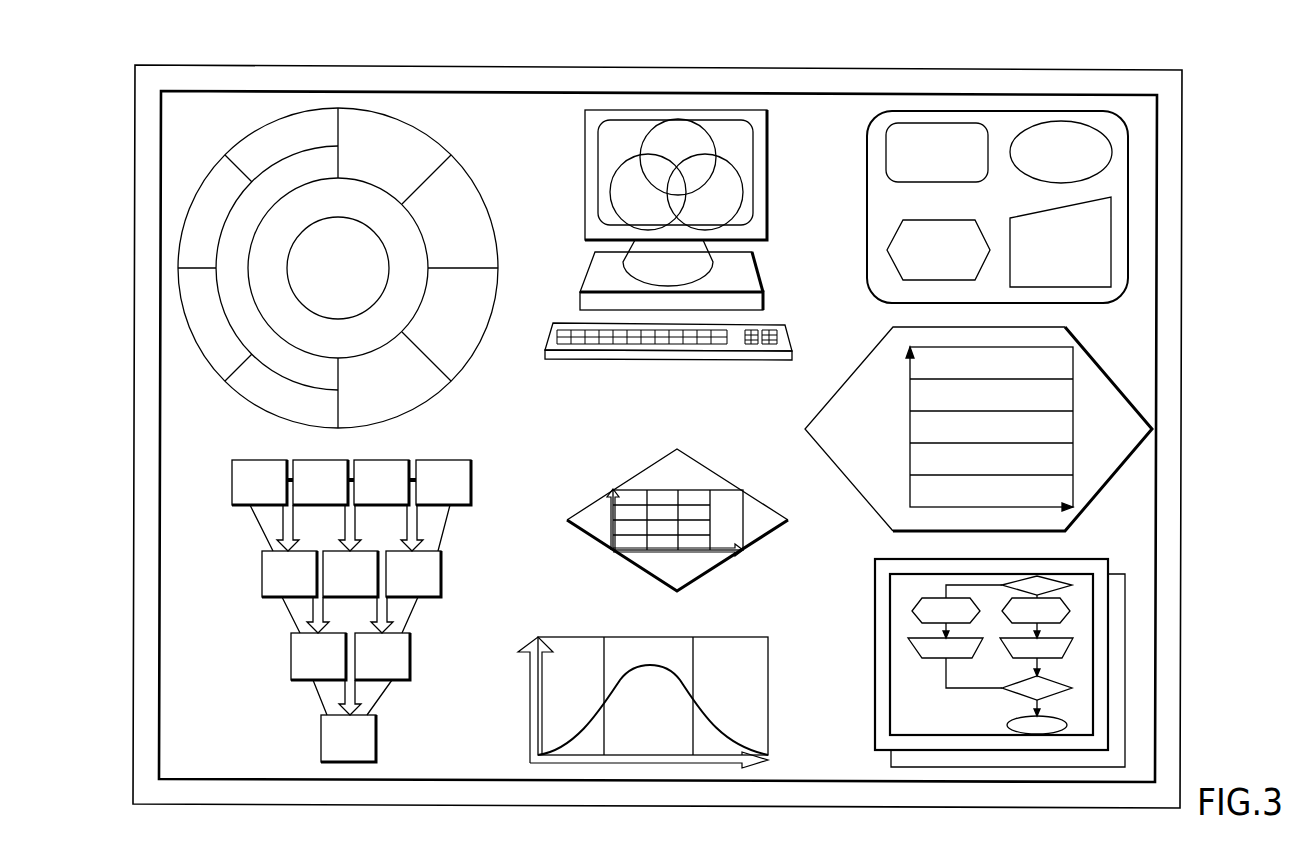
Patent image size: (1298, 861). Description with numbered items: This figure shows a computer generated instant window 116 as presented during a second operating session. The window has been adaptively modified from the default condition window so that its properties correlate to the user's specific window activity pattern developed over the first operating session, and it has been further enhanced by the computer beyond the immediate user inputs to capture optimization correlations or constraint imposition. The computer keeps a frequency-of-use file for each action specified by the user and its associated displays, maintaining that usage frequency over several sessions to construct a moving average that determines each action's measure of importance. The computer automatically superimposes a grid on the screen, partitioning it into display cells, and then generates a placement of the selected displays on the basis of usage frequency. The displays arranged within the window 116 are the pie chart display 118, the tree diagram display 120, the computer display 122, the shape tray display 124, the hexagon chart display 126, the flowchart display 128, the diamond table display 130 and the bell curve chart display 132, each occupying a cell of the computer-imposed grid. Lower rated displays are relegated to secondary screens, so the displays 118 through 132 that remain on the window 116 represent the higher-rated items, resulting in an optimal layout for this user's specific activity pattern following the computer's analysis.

The computer generated instant window 116 is at (1214, 74).
The pie chart display 118 is at (438, 140).
The tree diagram display 120 is at (432, 458).
The computer display 122 is at (768, 140).
The shape tray display 124 is at (867, 204).
The hexagon chart display 126 is at (1100, 368).
The flowchart display 128 is at (875, 662).
The diamond table display 130 is at (703, 463).
The bell curve chart display 132 is at (720, 636).